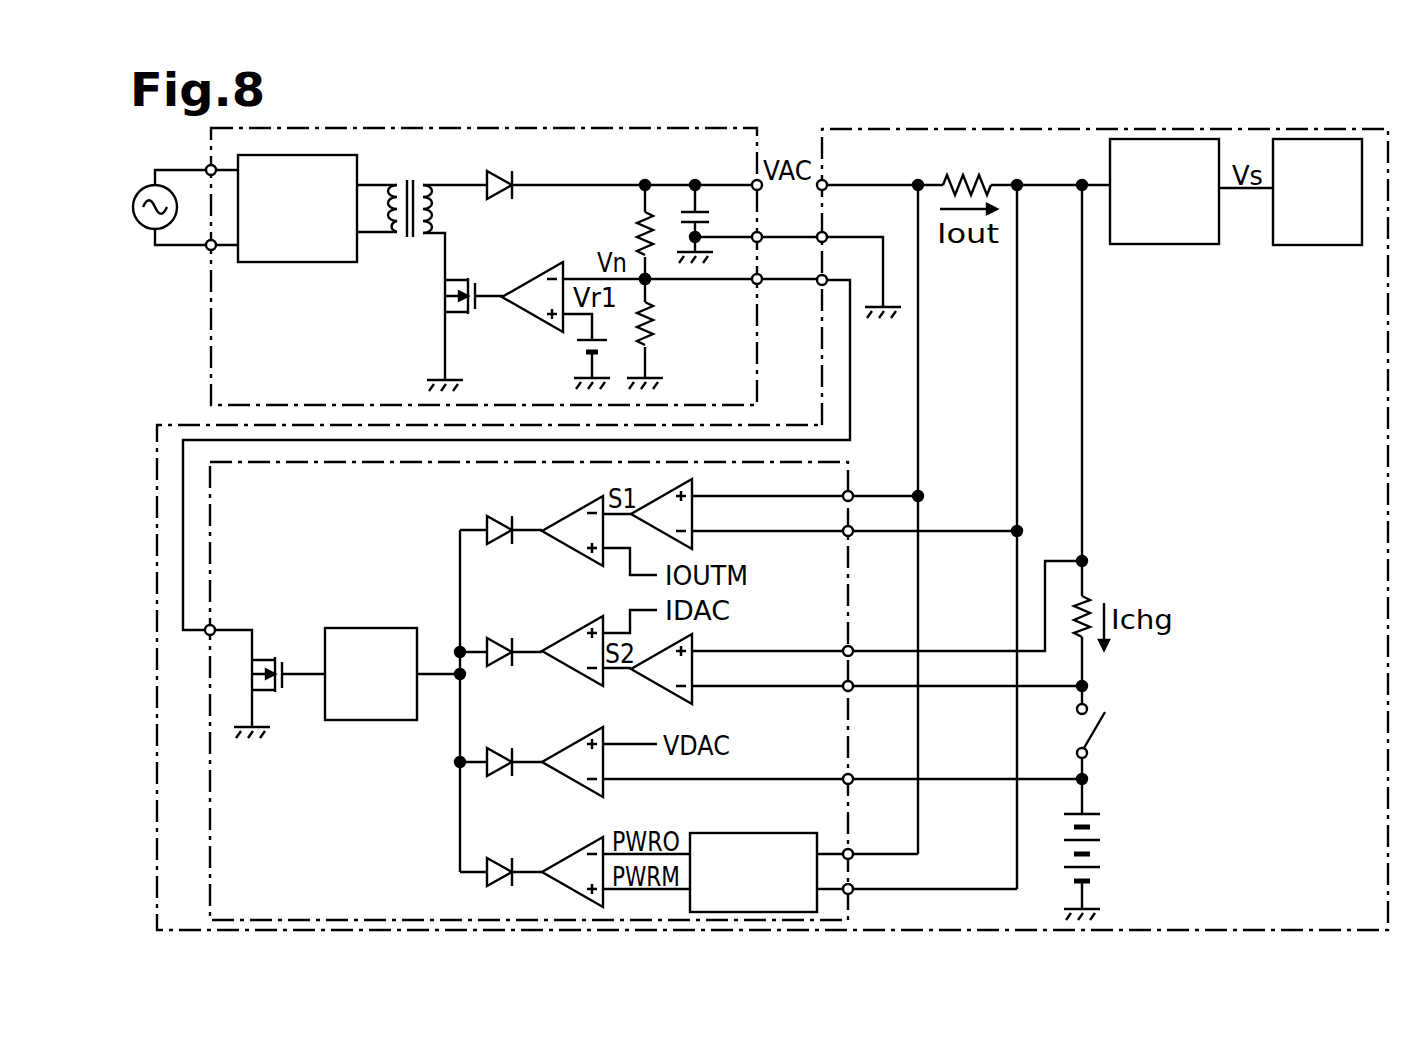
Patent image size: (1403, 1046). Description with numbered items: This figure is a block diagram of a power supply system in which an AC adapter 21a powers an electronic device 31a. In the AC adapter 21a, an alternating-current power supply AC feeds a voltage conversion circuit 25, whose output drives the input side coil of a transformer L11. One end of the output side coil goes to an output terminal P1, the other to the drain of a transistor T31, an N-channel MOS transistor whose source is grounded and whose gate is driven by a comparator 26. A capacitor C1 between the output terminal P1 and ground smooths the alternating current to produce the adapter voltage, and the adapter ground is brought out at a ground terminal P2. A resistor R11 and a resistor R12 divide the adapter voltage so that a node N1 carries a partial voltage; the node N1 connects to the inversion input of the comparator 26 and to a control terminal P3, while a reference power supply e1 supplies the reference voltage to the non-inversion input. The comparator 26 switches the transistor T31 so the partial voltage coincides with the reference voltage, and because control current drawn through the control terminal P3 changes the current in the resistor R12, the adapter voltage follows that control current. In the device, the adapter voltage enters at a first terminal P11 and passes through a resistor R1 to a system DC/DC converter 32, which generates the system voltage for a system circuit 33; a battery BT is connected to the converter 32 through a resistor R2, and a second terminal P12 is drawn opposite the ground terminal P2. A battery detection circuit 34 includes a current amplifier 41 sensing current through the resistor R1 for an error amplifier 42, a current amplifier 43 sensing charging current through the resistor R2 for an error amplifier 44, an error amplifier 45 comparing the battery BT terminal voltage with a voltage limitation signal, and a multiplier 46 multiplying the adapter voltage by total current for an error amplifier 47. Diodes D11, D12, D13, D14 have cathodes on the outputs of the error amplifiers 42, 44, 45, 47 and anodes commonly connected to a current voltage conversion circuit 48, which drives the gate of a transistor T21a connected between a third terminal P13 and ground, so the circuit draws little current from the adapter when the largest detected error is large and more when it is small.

The AC adapter 21a is at (557, 128).
The electronic device 31a is at (890, 128).
The battery detection circuit 34 is at (805, 462).
The alternating-current power supply AC is at (150, 186).
The voltage conversion circuit 25 is at (282, 152).
The transformer L11 is at (420, 180).
The transistor T31 is at (478, 312).
The comparator 26 is at (535, 278).
The reference power supply e1 is at (583, 354).
The resistor R11 is at (636, 230).
The resistor R12 is at (653, 339).
The node N1 is at (653, 284).
The capacitor C1 is at (708, 212).
The output terminal P1 is at (751, 181).
The ground terminal P2 is at (752, 241).
The control terminal P3 is at (752, 285).
The first terminal P11 is at (830, 178).
The terminal P12 is at (828, 230).
The third terminal P13 is at (843, 270).
The resistor R1 is at (975, 175).
The system DC/DC converter 32 is at (1195, 246).
The system circuit 33 is at (1336, 247).
The transistor T21a is at (292, 686).
The current voltage conversion circuit 48 is at (398, 627).
The diode D11 is at (500, 516).
The diode D12 is at (505, 638).
The diode D13 is at (507, 748).
The diode D14 is at (507, 859).
The current amplifier 41 is at (694, 486).
The error amplifier 42 is at (567, 512).
The current amplifier 43 is at (694, 642).
The error amplifier 44 is at (567, 632).
The error amplifier 45 is at (567, 744).
The multiplier 46 is at (795, 832).
The error amplifier 47 is at (567, 853).
The resistor R2 is at (1086, 603).
The battery BT is at (1096, 838).